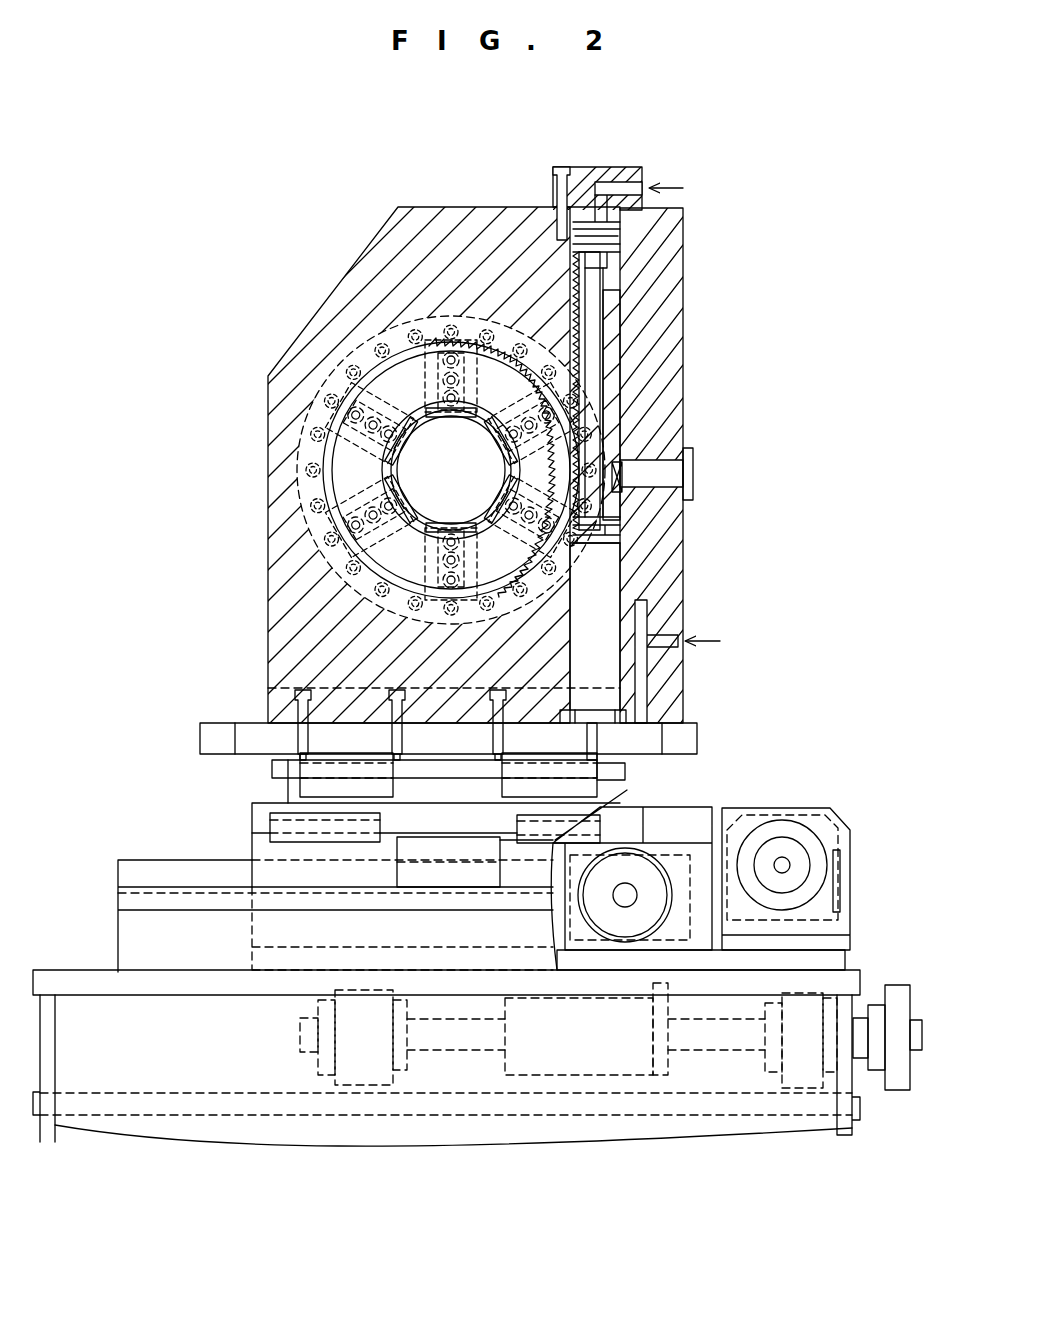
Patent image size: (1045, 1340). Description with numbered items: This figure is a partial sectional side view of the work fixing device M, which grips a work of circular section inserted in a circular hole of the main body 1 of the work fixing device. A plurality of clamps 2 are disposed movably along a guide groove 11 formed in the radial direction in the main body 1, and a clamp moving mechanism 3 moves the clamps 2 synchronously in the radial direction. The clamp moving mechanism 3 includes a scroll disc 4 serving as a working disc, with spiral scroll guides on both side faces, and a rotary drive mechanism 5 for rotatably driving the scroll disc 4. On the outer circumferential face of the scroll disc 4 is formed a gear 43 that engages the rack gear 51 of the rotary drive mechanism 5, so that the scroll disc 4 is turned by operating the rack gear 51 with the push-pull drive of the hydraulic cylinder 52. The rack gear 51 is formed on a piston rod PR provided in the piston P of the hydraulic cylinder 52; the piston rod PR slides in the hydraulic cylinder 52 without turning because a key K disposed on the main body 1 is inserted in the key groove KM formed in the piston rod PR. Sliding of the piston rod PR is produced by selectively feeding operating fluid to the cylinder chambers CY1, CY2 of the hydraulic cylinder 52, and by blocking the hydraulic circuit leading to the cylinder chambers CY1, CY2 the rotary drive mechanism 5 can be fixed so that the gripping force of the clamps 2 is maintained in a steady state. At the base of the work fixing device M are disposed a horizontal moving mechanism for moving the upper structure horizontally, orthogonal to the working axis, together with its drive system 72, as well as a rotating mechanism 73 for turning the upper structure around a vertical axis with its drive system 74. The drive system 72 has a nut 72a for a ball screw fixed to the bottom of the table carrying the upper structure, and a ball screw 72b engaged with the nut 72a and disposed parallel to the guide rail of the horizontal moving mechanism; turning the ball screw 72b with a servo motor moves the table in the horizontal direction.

The main body of work fixing device 1 is at (240, 303).
The work fixing device M is at (232, 467).
The clamp 2 is at (418, 387).
The guide groove 11 is at (413, 343).
The clamp moving mechanism 3 is at (637, 366).
The scroll disc 4 is at (557, 477).
The rotary drive mechanism 5 is at (594, 428).
The rack gear 51 is at (584, 305).
The hydraulic cylinder 52 is at (650, 628).
The gear 43 is at (623, 462).
The key K is at (650, 517).
The key groove KM is at (615, 345).
The piston P is at (625, 235).
The piston rod PR is at (628, 240).
The cylinder chamber CY1 is at (583, 210).
The cylinder chamber CY2 is at (593, 682).
The rotating mechanism 73 is at (288, 792).
The drive system 74 is at (787, 850).
The drive system 72 is at (740, 1035).
The nut for ball screw 72a is at (562, 1035).
The ball screw 72b is at (432, 1038).